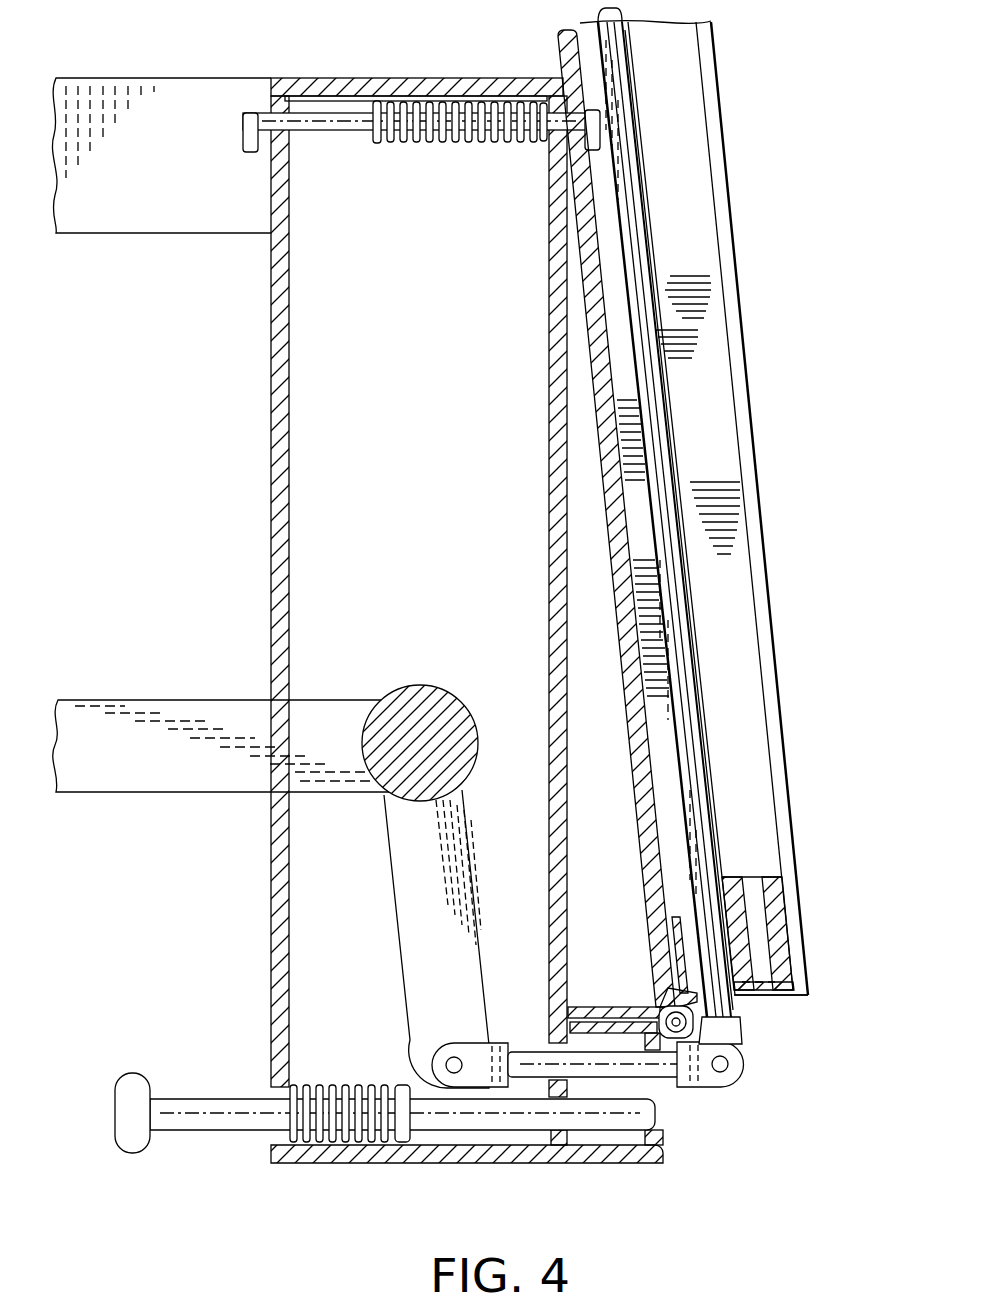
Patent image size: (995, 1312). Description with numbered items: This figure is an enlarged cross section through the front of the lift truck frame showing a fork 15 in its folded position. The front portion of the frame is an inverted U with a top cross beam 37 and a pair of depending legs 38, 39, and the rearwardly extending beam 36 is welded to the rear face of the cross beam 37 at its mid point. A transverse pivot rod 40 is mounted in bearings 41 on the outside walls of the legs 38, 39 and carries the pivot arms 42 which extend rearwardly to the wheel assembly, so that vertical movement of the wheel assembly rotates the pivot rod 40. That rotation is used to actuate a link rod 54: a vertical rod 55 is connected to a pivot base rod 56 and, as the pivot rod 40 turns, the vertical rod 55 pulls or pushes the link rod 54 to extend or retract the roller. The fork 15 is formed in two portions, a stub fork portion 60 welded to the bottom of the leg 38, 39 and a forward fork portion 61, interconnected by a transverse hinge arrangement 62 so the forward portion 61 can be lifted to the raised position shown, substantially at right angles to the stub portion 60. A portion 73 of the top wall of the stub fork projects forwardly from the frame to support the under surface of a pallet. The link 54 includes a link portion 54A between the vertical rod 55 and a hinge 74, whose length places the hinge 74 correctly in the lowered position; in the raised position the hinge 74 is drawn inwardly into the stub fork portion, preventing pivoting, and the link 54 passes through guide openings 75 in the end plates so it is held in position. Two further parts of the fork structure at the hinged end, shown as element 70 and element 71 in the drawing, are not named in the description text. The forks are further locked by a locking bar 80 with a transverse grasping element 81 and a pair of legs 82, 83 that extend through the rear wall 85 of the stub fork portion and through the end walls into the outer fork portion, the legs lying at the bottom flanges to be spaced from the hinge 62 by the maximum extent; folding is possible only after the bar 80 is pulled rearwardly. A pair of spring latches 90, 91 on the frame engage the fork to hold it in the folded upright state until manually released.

The fork 15 is at (749, 340).
The rearwardly extending beam 36 is at (176, 76).
The top cross beam 37 is at (401, 77).
The depending leg 38 is at (222, 591).
The depending leg 39 is at (269, 462).
The transverse pivot rod 40 is at (402, 689).
The bearing 41 is at (221, 716).
The pivot arm 42 is at (166, 699).
The link rod 54 is at (676, 440).
The link portion 54A is at (489, 1040).
The vertical rod 55 is at (430, 940).
The pivot base rod 56 is at (432, 1043).
The stub fork portion 60 is at (614, 1166).
The forward fork portion 61 is at (791, 830).
The transverse hinge arrangement 62 is at (650, 977).
The stop 70 is at (668, 1140).
The bottom rail 71 is at (797, 992).
The top wall portion 73 is at (593, 997).
The hinge 74 is at (748, 1068).
The guide opening 75 is at (735, 1012).
The locking bar 80 is at (189, 1148).
The transverse grasping element 81 is at (129, 1071).
The leg of locking bar 82 is at (276, 1081).
The leg of locking bar 83 is at (222, 1089).
The rear wall 85 is at (523, 1045).
The spring latch 90 is at (534, 145).
The spring latch 91 is at (421, 151).